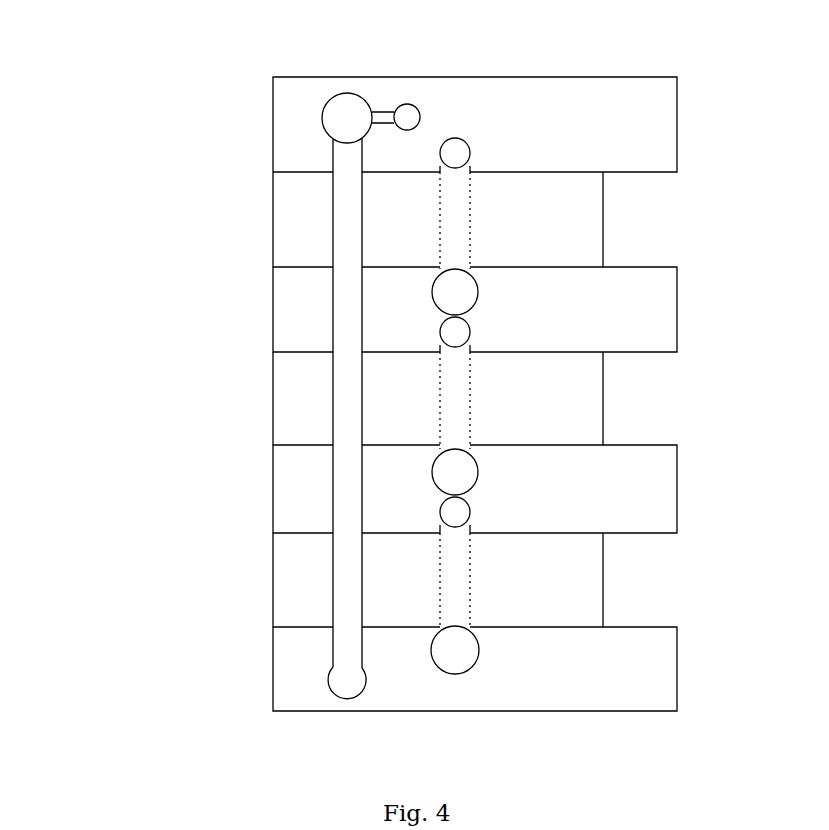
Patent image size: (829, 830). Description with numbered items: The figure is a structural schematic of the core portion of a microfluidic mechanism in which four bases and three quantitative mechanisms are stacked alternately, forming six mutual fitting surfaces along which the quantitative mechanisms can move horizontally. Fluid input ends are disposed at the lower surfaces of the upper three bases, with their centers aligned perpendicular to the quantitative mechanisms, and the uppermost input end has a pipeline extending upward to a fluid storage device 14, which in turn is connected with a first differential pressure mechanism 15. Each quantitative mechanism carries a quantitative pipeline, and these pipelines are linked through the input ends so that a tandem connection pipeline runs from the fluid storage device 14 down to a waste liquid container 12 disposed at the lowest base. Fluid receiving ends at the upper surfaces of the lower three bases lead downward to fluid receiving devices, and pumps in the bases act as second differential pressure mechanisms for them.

The waste liquid container 12 is at (347, 682).
The fluid storage device 14 is at (347, 110).
The first differential pressure mechanism 15 is at (410, 110).